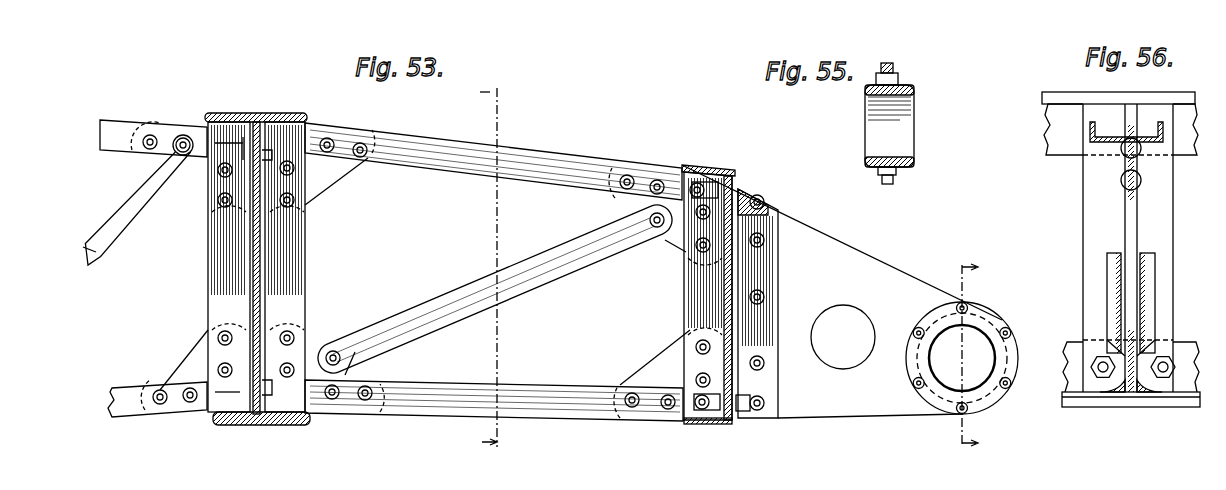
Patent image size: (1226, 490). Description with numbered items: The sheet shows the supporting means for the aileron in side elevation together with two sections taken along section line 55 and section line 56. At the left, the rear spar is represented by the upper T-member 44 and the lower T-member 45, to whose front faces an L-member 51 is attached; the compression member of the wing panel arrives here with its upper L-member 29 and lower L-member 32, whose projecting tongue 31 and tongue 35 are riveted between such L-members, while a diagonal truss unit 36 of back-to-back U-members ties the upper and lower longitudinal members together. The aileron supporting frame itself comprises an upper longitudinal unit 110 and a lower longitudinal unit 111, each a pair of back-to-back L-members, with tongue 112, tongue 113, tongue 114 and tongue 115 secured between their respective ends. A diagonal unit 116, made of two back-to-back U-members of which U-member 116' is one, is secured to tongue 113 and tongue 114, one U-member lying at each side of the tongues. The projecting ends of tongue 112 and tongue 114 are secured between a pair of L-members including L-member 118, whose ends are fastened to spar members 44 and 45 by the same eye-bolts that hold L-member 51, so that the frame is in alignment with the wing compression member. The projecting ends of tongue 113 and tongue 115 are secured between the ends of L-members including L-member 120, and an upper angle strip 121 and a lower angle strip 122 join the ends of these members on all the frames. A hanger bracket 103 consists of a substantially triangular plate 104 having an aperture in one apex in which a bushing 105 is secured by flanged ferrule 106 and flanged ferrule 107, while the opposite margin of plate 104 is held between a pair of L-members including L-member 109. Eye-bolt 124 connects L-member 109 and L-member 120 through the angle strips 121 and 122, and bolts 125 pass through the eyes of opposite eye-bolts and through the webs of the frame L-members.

In FIG. 53, the L-member 29 is at (134, 120).
In FIG. 53, the projecting tongue 31 is at (190, 190).
In FIG. 53, the L-member 32 is at (158, 412).
In FIG. 53, the projecting tongue 35 is at (178, 350).
In FIG. 53, the truss unit 36 is at (118, 203).
In FIG. 53, the upper T-member 44 is at (255, 113).
In FIG. 56, the upper T-member 44 is at (1062, 94).
In FIG. 53, the lower T-member 45 is at (258, 425).
In FIG. 56, the lower T-member 45 is at (1190, 408).
In FIG. 53, the L-member 51 is at (208, 244).
In FIG. 53, the section line 55- 55 is at (983, 355).
In FIG. 53, the section line 56- 56 is at (513, 265).
In FIG. 53, the hanger bracket 103 is at (897, 258).
In FIG. 53, the triangular plate 104 is at (870, 343).
In FIG. 55, the triangular plate 104 is at (888, 66).
In FIG. 55, the bushing 105 is at (895, 146).
In FIG. 55, the flanged ferrule 106 is at (866, 91).
In FIG. 53, the flanged ferrule 107 is at (1015, 360).
In FIG. 55, the flanged ferrule 107 is at (912, 162).
In FIG. 53, the L-member 109 is at (765, 204).
In FIG. 53, the upper longitudinal unit 110 is at (400, 133).
In FIG. 56, the upper longitudinal unit 110 is at (1100, 121).
In FIG. 53, the lower longitudinal unit 111 is at (433, 416).
In FIG. 56, the lower longitudinal unit 111 is at (1170, 396).
In FIG. 53, the tongue 112 is at (322, 175).
In FIG. 53, the tongue 113 is at (676, 256).
In FIG. 53, the tongue 114 is at (382, 372).
In FIG. 53, the tongue 115 is at (660, 348).
In FIG. 53, the diagonal unit 116 is at (495, 289).
In FIG. 56, the U-member 116' is at (1083, 302).
In FIG. 53, the L-member 118 is at (290, 268).
In FIG. 53, the L-member 120 is at (688, 310).
In FIG. 53, the angle strip 121 is at (716, 166).
In FIG. 53, the angle strip 122 is at (720, 426).
In FIG. 53, the eye-bolt 124 is at (750, 192).
In FIG. 53, the bolt 125 is at (690, 182).